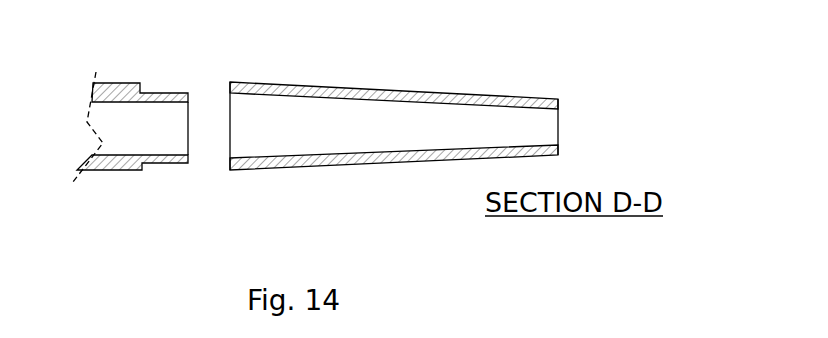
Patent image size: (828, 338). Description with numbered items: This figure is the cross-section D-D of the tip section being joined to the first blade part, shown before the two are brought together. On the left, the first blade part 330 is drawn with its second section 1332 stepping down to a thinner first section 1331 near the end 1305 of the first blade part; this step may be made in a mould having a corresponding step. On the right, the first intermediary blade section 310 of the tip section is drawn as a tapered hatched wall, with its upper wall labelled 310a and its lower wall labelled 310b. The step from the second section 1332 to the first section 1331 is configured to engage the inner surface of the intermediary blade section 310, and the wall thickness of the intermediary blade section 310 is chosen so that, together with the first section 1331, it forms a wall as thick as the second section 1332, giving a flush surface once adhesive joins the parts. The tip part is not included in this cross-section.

The first intermediary blade section 310 is at (431, 92).
The tube upper wall 310a is at (373, 101).
The tube lower wall 310b is at (327, 157).
The first blade part 330 is at (147, 143).
The end of the first blade part 1305 is at (189, 100).
The first section 1331 is at (160, 94).
The second section 1332 is at (118, 82).